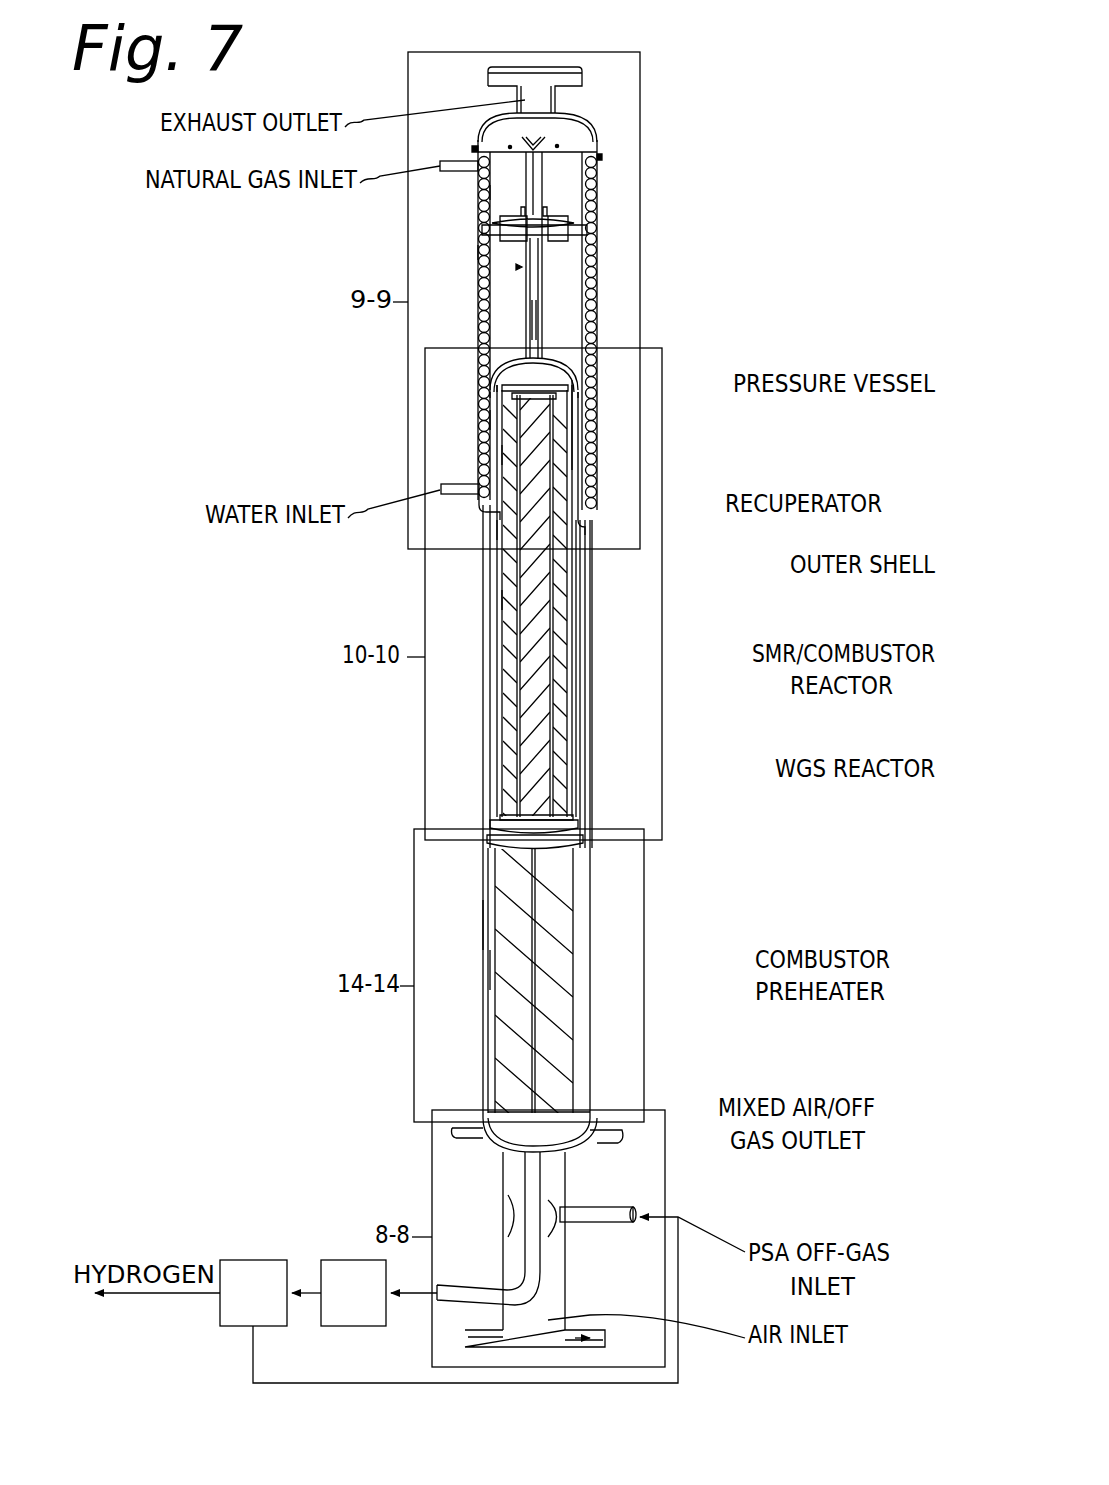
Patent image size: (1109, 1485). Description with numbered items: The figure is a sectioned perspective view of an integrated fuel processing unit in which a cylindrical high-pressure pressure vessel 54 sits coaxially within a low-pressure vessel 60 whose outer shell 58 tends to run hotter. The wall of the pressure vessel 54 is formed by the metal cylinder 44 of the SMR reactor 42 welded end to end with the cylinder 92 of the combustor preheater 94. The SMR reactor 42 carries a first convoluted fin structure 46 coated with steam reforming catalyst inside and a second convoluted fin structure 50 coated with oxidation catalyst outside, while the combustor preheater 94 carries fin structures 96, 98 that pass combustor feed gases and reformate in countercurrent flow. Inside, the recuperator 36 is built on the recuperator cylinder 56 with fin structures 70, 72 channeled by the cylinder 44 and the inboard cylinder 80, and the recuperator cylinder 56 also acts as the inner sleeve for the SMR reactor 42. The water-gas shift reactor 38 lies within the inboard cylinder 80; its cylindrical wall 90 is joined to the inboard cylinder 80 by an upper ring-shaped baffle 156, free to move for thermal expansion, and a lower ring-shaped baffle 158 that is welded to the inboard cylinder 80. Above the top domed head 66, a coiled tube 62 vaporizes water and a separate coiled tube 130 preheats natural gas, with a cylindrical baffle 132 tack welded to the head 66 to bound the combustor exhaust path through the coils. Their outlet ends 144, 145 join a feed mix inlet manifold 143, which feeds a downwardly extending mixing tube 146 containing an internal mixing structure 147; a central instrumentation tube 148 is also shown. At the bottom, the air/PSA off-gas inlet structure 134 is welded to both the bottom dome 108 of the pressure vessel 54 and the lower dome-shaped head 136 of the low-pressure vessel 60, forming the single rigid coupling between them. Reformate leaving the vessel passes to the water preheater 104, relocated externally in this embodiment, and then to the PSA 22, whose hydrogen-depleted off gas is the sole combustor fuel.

The cylindrical baffle 132 is at (573, 150).
The coiled tube for the natural gas preheater 130 is at (597, 192).
The coiled tube 62 is at (545, 320).
The central instrumentation tube 148 is at (527, 188).
The outlet end of coil 62 144 is at (478, 253).
The feed mix inlet manifold 143 is at (585, 228).
The outlet end of coil 130 145 is at (560, 230).
The SMR reactor 42 is at (548, 265).
The mixing tube 146 is at (543, 293).
The internal mixing structure 147 is at (600, 308).
The pressure vessel 54 is at (577, 363).
The top domed head 66 is at (510, 360).
The upper ring-shaped baffle 156 is at (573, 383).
The recuperator 36 is at (593, 503).
The water-gas shift reactor 38 is at (580, 752).
The outer shell 58 is at (592, 537).
The low-pressure vessel 60 is at (596, 596).
The metal cylinder 44 is at (580, 690).
The cylindrical wall of the WGS reactor 90 is at (500, 378).
The fin structure 70 is at (490, 422).
The fin structure 72 is at (502, 455).
The recuperator cylinder 56 is at (510, 527).
The inboard cylinder 80 is at (510, 598).
The lower ring-shaped baffle 158 is at (500, 815).
The first convoluted fin structure 46 is at (575, 793).
The second convoluted fin structure 50 is at (582, 805).
The combustor preheater 94 is at (580, 962).
The cylinder 92 is at (492, 888).
The fin structure 96 is at (483, 930).
The fin structure 98 is at (490, 965).
The bottom dome 108 is at (495, 1152).
The lower dome-shaped head 136 is at (497, 1155).
The air/PSA off-gas inlet structure 134 is at (562, 1182).
The pressure swing absorption unit 22 is at (268, 1314).
The water preheater 104 is at (375, 1309).